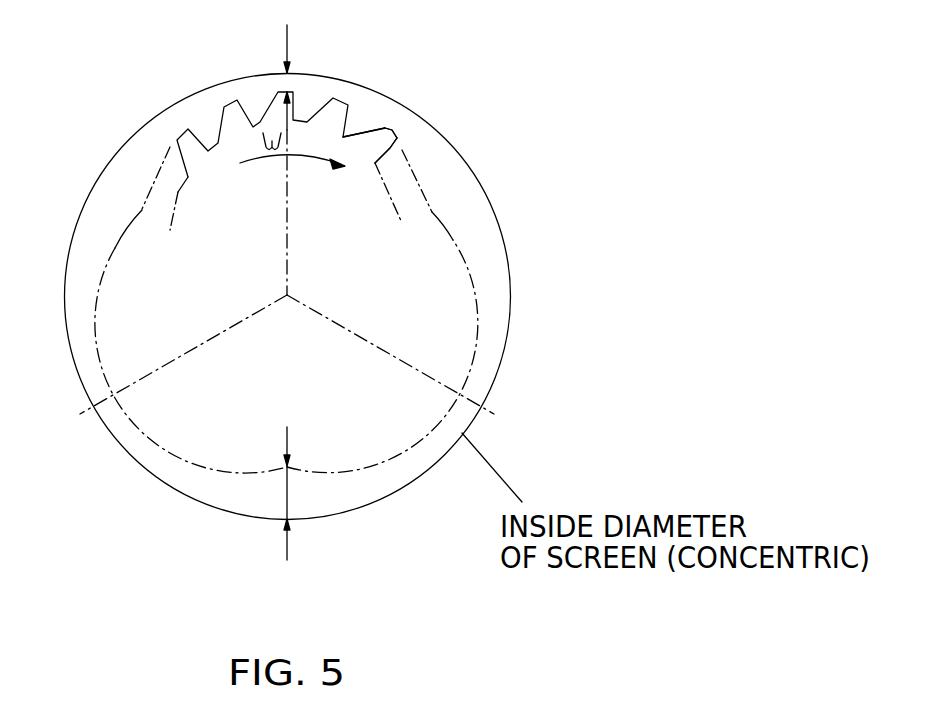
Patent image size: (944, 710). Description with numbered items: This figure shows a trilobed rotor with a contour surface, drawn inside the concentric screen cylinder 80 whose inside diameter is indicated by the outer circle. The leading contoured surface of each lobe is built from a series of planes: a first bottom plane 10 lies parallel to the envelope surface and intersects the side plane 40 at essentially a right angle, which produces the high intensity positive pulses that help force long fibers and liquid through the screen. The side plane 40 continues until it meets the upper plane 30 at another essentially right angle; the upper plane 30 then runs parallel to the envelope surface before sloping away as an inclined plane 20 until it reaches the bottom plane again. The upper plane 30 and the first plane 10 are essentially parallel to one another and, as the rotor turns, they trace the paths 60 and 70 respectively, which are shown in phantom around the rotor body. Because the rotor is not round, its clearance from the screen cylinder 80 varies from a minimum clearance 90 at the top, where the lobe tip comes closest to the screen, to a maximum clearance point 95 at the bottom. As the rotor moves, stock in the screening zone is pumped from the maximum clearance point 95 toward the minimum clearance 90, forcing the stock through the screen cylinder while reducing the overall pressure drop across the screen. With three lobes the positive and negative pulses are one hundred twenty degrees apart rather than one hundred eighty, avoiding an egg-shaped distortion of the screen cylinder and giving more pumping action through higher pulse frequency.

The first bottom plane 10 is at (345, 135).
The inclined plane 20 is at (369, 135).
The upper plane 30 is at (389, 130).
The side plane 40 is at (391, 148).
The path of the upper plane 60 is at (160, 163).
The path of the first plane 70 is at (172, 208).
The concentric screen cylinder 80 is at (403, 490).
The minimum clearance 90 is at (289, 65).
The maximum clearance point 95 is at (288, 512).